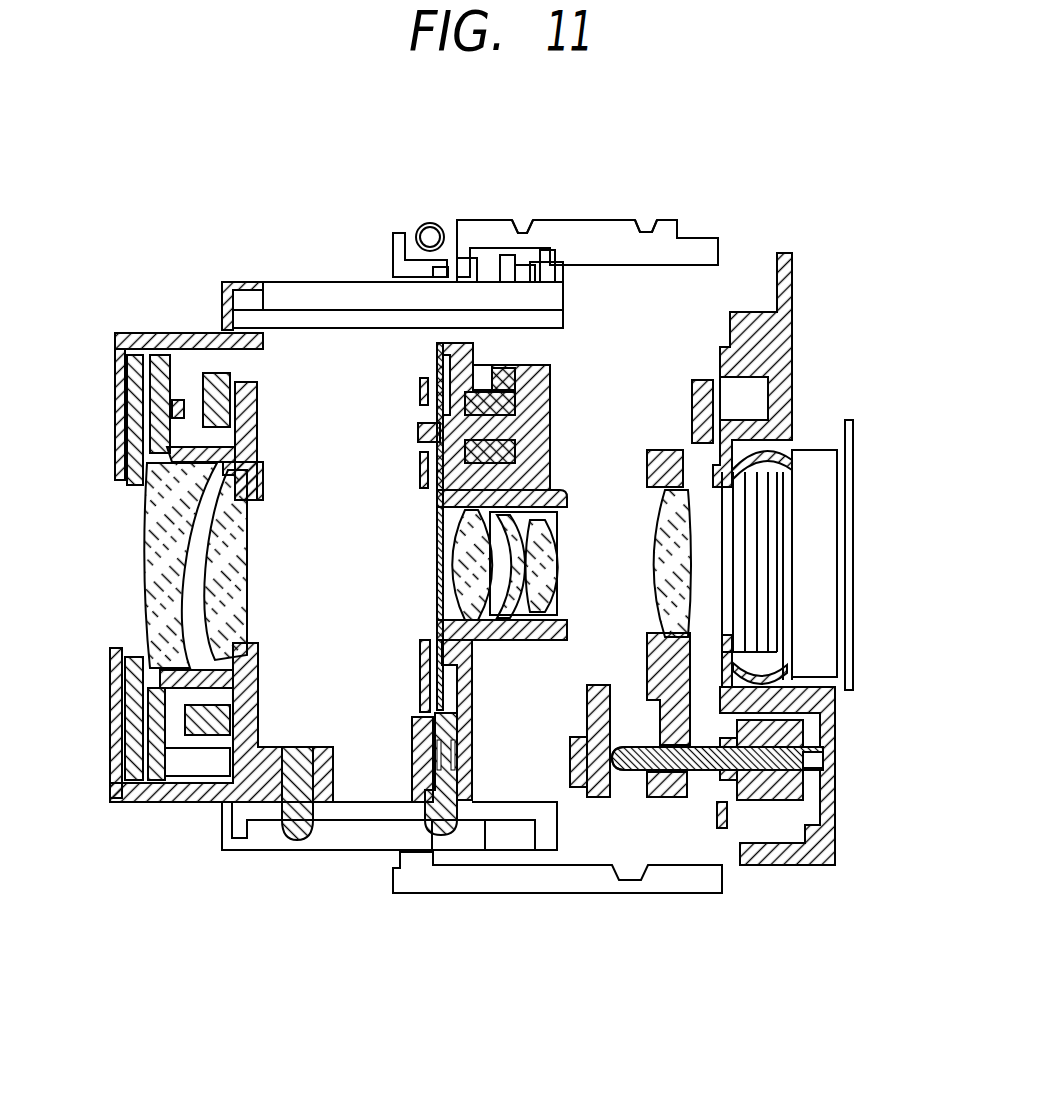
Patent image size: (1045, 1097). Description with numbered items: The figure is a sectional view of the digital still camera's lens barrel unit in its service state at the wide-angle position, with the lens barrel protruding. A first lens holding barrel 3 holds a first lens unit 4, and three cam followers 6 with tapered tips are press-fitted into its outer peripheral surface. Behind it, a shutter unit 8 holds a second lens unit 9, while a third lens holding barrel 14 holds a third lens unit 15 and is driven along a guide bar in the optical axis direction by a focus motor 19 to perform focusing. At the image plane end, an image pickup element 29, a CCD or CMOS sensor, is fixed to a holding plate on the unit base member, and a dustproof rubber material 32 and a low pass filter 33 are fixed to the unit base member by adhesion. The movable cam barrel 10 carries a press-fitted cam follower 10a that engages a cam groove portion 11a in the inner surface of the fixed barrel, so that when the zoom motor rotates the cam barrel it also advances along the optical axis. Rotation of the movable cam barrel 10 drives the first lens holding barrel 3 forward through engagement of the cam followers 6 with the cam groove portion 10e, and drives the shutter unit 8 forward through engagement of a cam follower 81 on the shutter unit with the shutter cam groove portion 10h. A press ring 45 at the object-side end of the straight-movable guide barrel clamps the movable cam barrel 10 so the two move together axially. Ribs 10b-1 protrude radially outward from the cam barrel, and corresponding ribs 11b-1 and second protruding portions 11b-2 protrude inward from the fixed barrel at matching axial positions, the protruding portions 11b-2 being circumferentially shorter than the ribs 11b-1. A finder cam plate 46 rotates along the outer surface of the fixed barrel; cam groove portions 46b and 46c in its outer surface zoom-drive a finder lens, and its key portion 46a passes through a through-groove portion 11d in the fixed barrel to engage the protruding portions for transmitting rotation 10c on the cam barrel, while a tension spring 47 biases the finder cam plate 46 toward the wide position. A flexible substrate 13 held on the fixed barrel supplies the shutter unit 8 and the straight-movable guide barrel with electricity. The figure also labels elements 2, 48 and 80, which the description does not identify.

The base plate 2 is at (663, 880).
The first lens holding barrel 3 is at (177, 798).
The first lens unit 4 is at (150, 614).
The cam follower 6 is at (297, 840).
The shutter unit 8 is at (403, 431).
The second lens unit 9 is at (545, 550).
The movable cam barrel 10 is at (288, 292).
The cam follower 10a is at (468, 258).
The ribs 10b-1 is at (400, 278).
The protruding portions for transmitting rotation 10c is at (530, 285).
The cam groove portion 10e is at (318, 837).
The shutter cam groove portion 10h is at (452, 837).
The cam groove portion 11a is at (455, 287).
The ribs 11b-1 is at (405, 272).
The second protruding portions 11b-2 is at (550, 272).
The through-groove portion 11d is at (517, 287).
The flexible substrate 13 is at (473, 705).
The third lens holding barrel 14 is at (673, 653).
The third lens unit 15 is at (677, 530).
The focus motor 19 is at (697, 777).
The image pickup element 29 is at (810, 458).
The dustproof rubber material 32 is at (785, 688).
The low pass filter 33 is at (758, 636).
The press ring 45 is at (223, 312).
The finder cam plate 46 is at (605, 223).
The key portion 46a is at (530, 285).
The cam groove portion 46b is at (522, 230).
The cam groove portion 46c is at (650, 222).
The tension spring 47 is at (430, 222).
The magnet 48 is at (115, 400).
The bearing 80 is at (413, 763).
The cam follower 81 is at (438, 837).